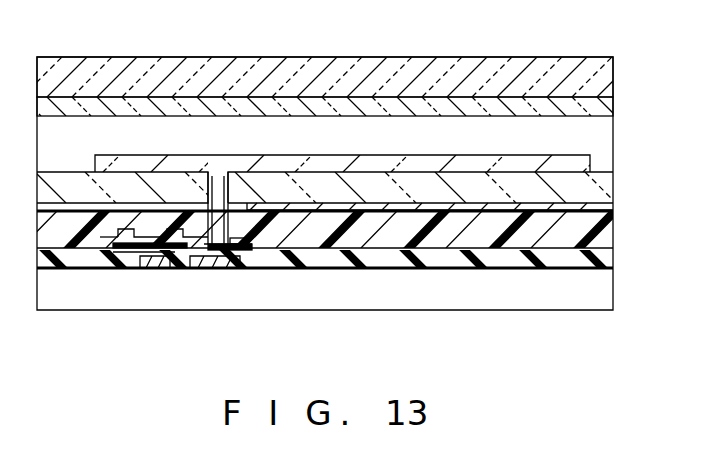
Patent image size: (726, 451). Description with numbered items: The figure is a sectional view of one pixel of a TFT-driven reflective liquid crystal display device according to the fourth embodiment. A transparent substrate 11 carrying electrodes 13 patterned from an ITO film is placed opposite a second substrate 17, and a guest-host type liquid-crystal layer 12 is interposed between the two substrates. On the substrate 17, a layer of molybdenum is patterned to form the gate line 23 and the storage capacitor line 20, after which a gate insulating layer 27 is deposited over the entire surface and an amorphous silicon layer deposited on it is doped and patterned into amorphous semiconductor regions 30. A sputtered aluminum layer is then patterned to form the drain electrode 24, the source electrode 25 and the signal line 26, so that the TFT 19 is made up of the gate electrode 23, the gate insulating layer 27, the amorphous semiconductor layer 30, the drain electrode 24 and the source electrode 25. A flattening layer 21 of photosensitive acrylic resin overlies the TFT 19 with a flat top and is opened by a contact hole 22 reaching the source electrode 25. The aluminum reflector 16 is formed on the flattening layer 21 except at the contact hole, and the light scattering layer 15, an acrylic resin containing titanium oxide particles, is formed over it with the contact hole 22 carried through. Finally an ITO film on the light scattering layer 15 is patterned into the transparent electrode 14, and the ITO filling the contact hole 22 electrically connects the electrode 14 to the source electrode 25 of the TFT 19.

The substrate 11 is at (412, 67).
The liquid-crystal layer 12 is at (606, 128).
The electrodes 13 is at (487, 98).
The transparent electrode 14 is at (281, 165).
The light scattering layer 15 is at (605, 185).
The reflector 16 is at (615, 206).
The substrate 17 is at (362, 294).
The TFT 19 is at (123, 255).
The storage capacitor line 20 is at (212, 258).
The flattening layer 21 is at (615, 240).
The contact hole 22 is at (235, 257).
The gate line 23 is at (155, 260).
The drain electrode 24 is at (133, 242).
The source electrode 25 is at (195, 230).
The signal line 26 is at (92, 241).
The gate insulating layer 27 is at (615, 268).
The amorphous semiconductor regions 30 is at (140, 258).